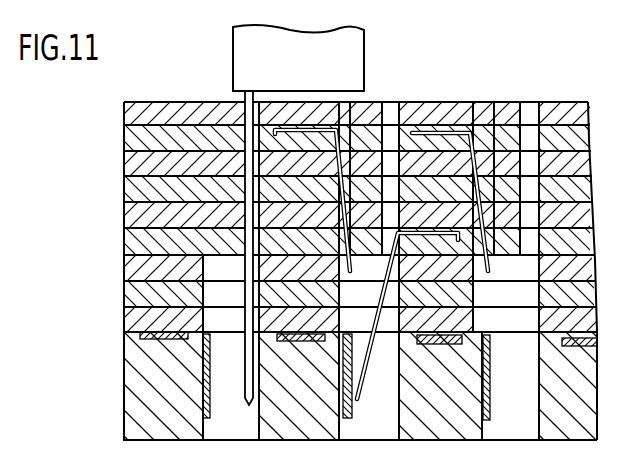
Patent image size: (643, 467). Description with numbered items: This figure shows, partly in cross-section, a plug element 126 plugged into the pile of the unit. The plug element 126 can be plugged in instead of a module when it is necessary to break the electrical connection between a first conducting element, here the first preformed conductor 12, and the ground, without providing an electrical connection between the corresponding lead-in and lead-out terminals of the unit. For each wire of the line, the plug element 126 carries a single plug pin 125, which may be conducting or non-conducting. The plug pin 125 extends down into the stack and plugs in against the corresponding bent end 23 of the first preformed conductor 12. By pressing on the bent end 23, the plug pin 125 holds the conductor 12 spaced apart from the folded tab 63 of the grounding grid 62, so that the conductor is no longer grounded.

The first preformed conductor 12 is at (300, 230).
The bent end 23 is at (257, 268).
The grounding grid 62 is at (162, 340).
The folded tab 63 is at (160, 383).
The plug pin 125 is at (243, 110).
The plug element 126 is at (312, 67).